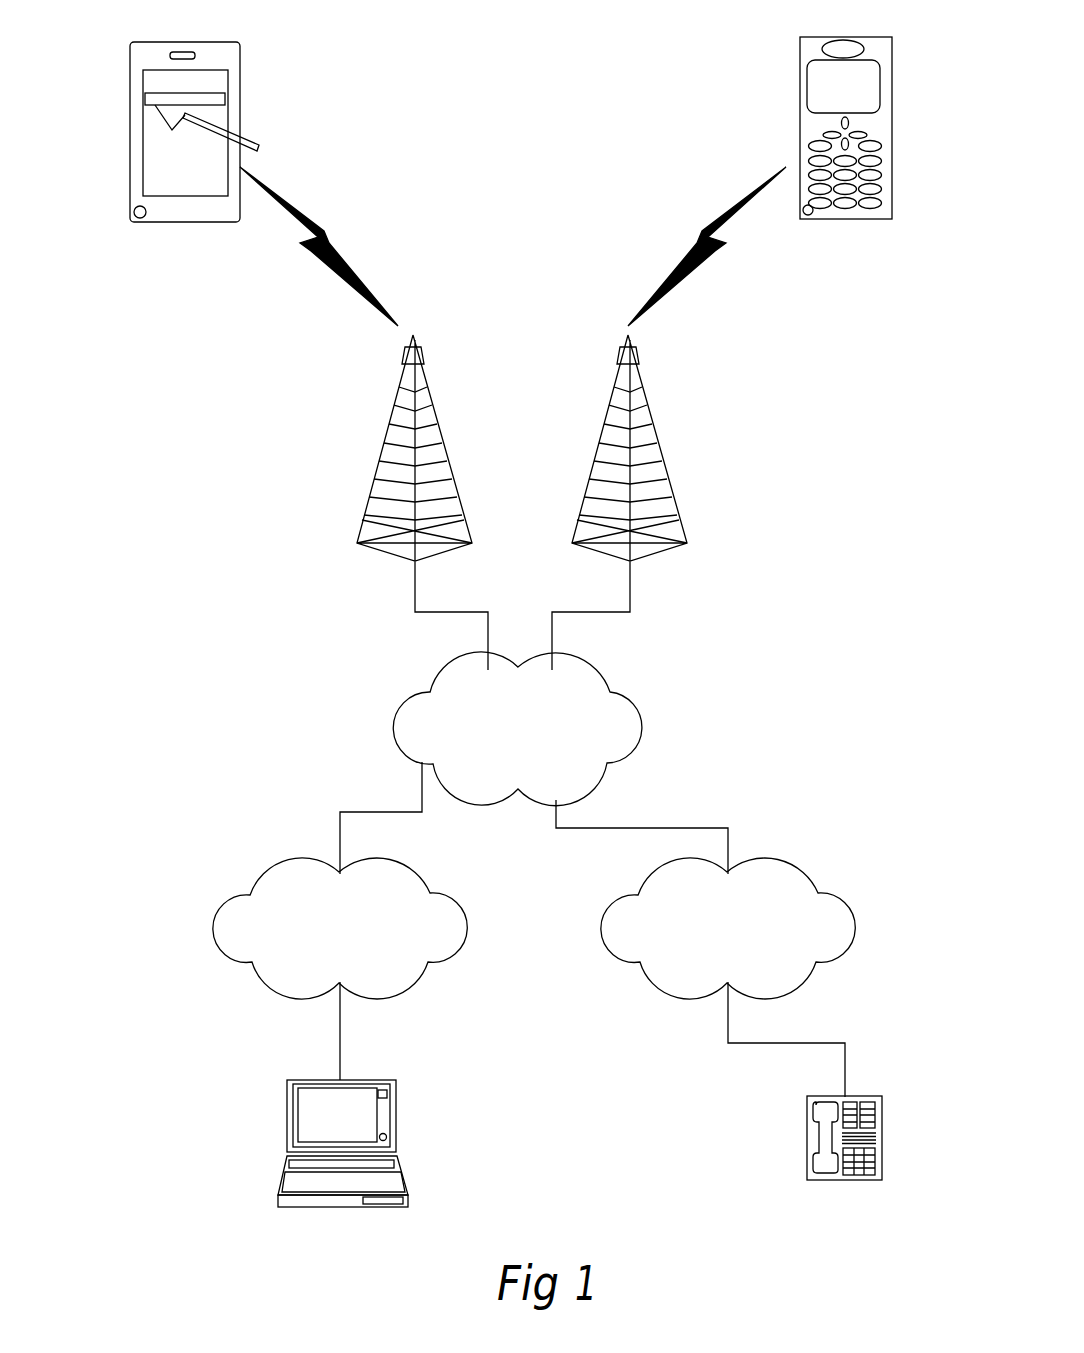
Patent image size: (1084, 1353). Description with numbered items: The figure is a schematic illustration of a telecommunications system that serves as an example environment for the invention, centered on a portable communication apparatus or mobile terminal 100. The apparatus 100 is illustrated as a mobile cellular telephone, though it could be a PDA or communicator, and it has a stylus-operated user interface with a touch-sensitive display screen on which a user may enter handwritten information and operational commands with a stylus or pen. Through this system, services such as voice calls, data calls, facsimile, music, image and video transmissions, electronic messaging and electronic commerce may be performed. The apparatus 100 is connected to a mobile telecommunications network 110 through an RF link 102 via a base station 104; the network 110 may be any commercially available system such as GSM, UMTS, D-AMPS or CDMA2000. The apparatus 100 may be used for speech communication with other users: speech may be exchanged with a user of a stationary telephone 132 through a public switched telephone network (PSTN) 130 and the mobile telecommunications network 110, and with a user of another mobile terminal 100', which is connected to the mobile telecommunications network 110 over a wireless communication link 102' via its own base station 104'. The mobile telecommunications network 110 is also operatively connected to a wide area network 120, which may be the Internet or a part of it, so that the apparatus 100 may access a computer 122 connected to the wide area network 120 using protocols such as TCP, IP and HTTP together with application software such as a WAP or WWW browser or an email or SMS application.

The portable communication apparatus 100 is at (164, 112).
The another mobile terminal 100' is at (813, 110).
The RF link 102 is at (319, 246).
The wireless communication link 102' is at (707, 246).
The base station 104 is at (396, 457).
The base station 104' is at (610, 457).
The mobile telecommunications network 110 is at (498, 697).
The wide area network 120 is at (321, 913).
The computer 122 is at (296, 1180).
The public switched telephone network 130 is at (709, 925).
The stationary telephone 132 is at (810, 1118).